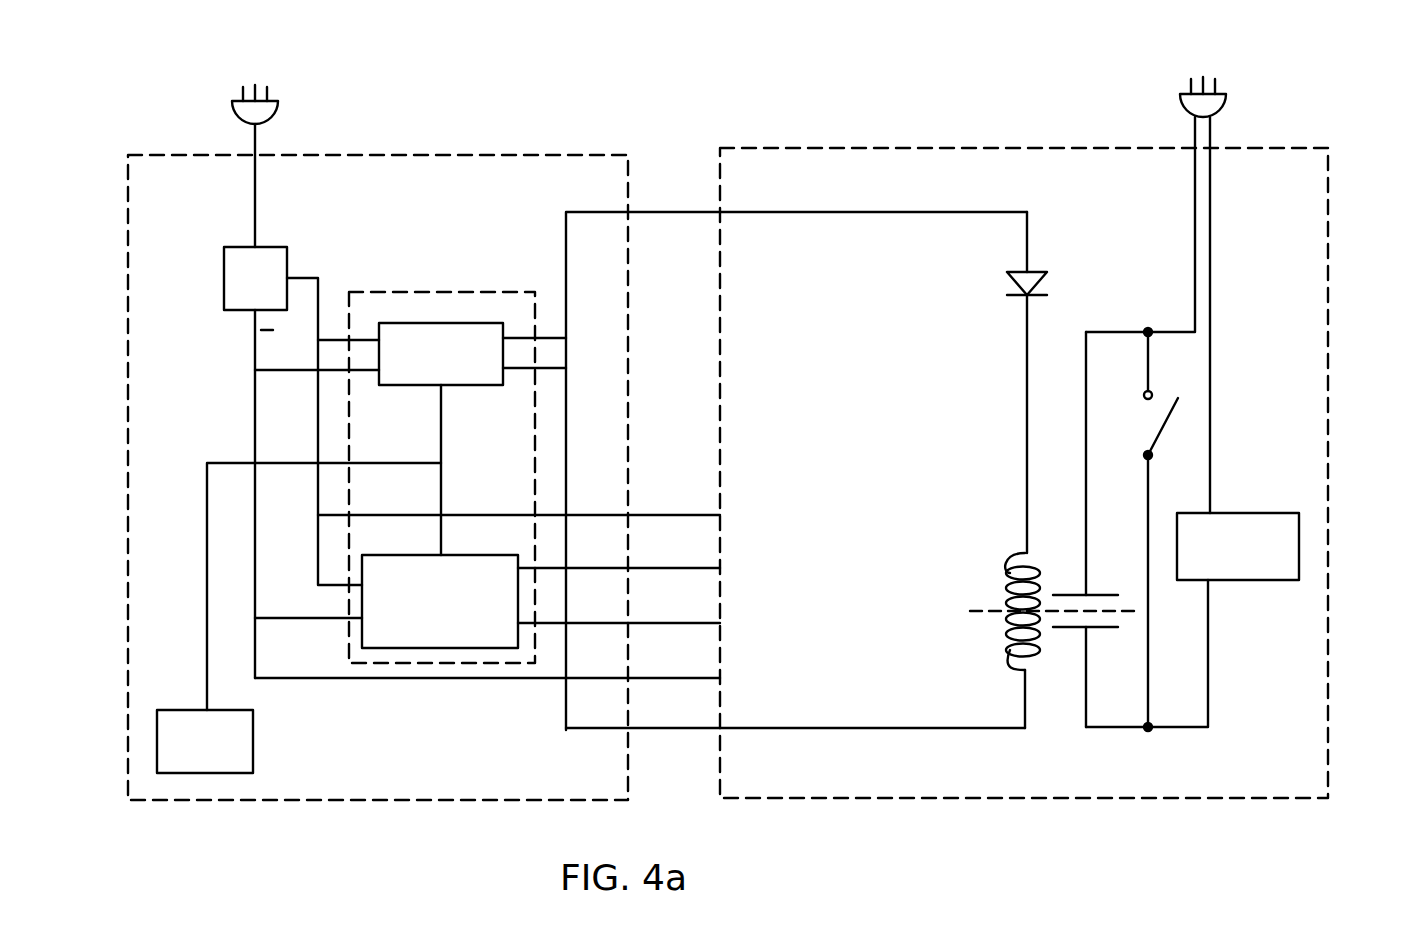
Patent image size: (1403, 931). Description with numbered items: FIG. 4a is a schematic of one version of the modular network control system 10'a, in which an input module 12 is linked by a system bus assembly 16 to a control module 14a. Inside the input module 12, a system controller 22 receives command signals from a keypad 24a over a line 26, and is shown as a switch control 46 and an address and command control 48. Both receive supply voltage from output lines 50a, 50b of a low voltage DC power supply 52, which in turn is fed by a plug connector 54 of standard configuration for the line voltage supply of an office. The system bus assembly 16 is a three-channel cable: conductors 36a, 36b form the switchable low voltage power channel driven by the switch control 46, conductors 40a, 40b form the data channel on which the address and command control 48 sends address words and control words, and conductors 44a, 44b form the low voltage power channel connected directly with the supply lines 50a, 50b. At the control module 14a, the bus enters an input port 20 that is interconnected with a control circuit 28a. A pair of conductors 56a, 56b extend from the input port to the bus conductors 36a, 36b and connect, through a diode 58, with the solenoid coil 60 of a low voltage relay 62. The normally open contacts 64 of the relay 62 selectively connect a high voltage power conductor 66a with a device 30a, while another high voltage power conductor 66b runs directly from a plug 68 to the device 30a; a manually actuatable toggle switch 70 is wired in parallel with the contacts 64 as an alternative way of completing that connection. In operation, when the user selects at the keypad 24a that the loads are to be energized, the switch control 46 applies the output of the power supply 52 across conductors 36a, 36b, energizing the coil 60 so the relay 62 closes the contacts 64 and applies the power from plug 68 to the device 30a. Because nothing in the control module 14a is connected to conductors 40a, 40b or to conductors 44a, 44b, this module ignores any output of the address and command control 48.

The modular network control system 10'a is at (549, 80).
The input module 12 is at (254, 808).
The control module 14a is at (841, 146).
The system bus assembly 16 is at (695, 210).
The input port 20 is at (715, 733).
The system controller 22 is at (403, 290).
The keypad 24a is at (253, 745).
The line 26 is at (205, 557).
The control circuit 28a is at (831, 404).
The device 30a is at (1300, 552).
The conductor 36a is at (643, 212).
The conductor 36b is at (688, 733).
The conductor 40a is at (687, 566).
The conductor 40b is at (687, 621).
The conductor 44a is at (687, 512).
The conductor 44b is at (687, 676).
The switch control 46 is at (445, 322).
The address and command control 48 is at (443, 648).
The output line 50a is at (320, 290).
The output line 50b is at (255, 350).
The low voltage DC power supply 52 is at (273, 245).
The plug connector 54 is at (277, 112).
The conductor 56a is at (810, 212).
The conductor 56b is at (812, 733).
The diode 58 is at (1027, 268).
The solenoid coil 60 is at (1008, 588).
The low voltage relay 62 is at (1012, 675).
The normally open contacts 64 is at (1082, 630).
The high voltage power conductor 66a is at (1193, 190).
The high voltage power conductor 66b is at (1212, 227).
The plug 68 is at (1220, 108).
The toggle switch 70 is at (1167, 423).